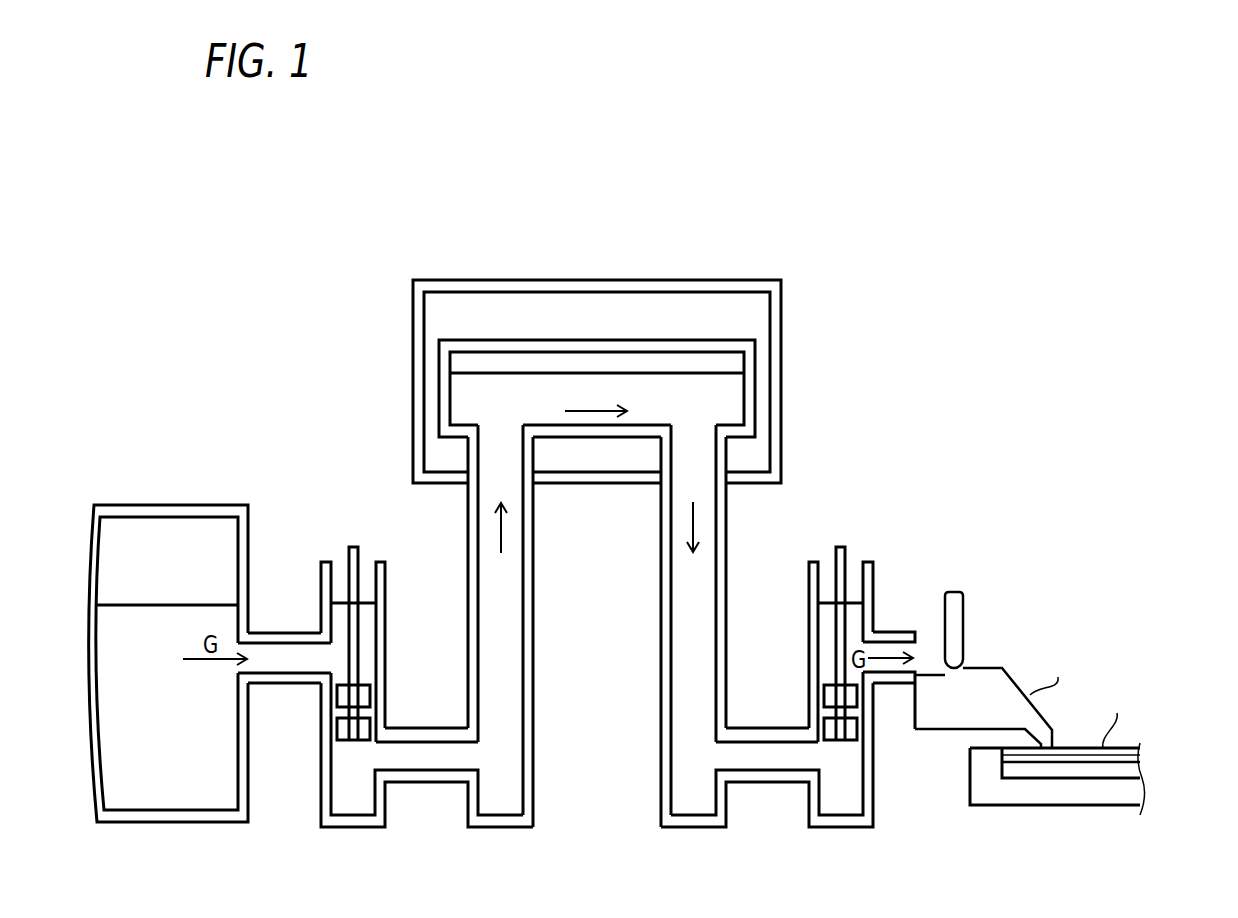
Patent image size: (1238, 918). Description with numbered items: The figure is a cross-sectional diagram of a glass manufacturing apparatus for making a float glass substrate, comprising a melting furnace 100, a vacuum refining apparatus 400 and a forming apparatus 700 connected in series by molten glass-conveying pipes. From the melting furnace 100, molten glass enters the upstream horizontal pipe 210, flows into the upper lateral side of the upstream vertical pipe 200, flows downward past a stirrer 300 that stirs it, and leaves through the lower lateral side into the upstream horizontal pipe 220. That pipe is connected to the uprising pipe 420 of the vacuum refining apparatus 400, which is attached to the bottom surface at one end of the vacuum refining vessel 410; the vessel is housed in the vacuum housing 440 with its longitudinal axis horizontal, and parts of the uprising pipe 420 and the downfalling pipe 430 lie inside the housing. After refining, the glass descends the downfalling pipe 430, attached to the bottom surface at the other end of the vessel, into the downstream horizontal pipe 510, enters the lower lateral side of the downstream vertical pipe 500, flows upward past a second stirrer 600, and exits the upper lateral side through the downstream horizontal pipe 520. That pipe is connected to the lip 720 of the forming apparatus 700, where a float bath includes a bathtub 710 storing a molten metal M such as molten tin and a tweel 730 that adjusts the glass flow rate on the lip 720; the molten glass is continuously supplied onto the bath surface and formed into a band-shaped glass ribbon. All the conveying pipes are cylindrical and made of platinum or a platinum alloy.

The melting furnace 100 is at (177, 503).
The upstream vertical pipe 200 is at (385, 590).
The upstream horizontal pipe 210 is at (283, 688).
The upstream horizontal pipe 220 is at (424, 727).
The stirrer 300 is at (358, 640).
The vacuum refining apparatus 400 is at (781, 227).
The vacuum refining vessel 410 is at (573, 340).
The uprising pipe 420 is at (533, 589).
The downfalling pipe 430 is at (662, 523).
The vacuum housing 440 is at (623, 280).
The downstream vertical pipe 500 is at (809, 593).
The downstream horizontal pipe 510 is at (768, 727).
The downstream horizontal pipe 520 is at (900, 688).
The stirrer 600 is at (836, 640).
The forming apparatus 700 is at (1208, 460).
The bathtub 710 is at (1120, 787).
The lip 720 is at (988, 690).
The tweel 730 is at (953, 592).
The molten metal M is at (1120, 768).